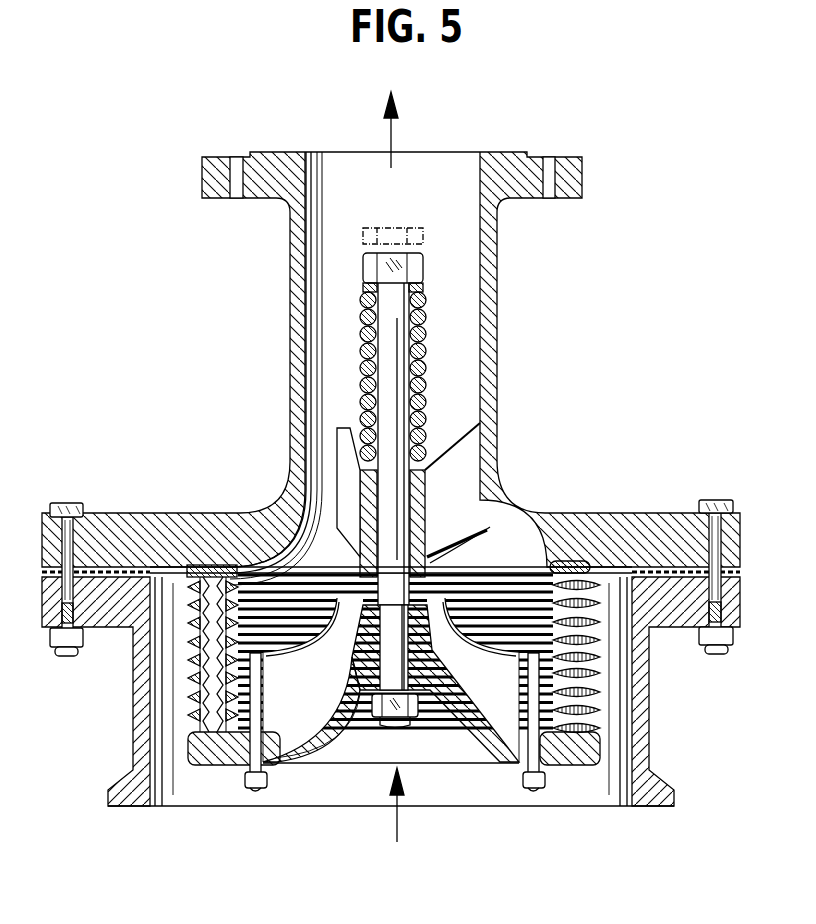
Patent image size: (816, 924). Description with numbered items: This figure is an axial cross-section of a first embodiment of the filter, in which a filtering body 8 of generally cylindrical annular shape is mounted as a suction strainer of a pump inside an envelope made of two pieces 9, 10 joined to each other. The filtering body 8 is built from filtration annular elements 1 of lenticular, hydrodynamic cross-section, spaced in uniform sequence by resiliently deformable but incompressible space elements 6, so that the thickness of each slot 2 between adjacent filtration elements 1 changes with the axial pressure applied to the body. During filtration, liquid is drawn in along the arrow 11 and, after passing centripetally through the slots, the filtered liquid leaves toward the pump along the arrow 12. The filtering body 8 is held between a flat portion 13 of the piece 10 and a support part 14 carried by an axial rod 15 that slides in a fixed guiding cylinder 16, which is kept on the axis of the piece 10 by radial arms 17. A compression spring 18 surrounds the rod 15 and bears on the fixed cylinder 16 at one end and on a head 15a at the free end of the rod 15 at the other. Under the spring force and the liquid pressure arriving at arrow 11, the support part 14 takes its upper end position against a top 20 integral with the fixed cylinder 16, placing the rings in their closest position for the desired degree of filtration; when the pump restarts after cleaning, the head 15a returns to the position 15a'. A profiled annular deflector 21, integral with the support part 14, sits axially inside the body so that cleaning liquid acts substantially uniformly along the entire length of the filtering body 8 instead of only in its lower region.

The filtration annular elements 1 is at (597, 622).
The slot 2 is at (598, 692).
The space elements 6 is at (193, 717).
The filtering body 8 is at (188, 661).
The envelope piece 9 is at (143, 657).
The envelope piece 10 is at (293, 505).
The arrow 11 is at (400, 820).
The arrow 12 is at (393, 131).
The flat portion 13 is at (578, 560).
The support part 14 is at (301, 757).
The axial rod 15 is at (390, 400).
The head 15a is at (419, 272).
The head return position 15a' is at (422, 232).
The fixed guiding cylinder 16 is at (417, 510).
The radial arms 17 is at (428, 500).
The compression spring 18 is at (423, 354).
The top 20 is at (490, 527).
The profiled annular deflector 21 is at (452, 632).